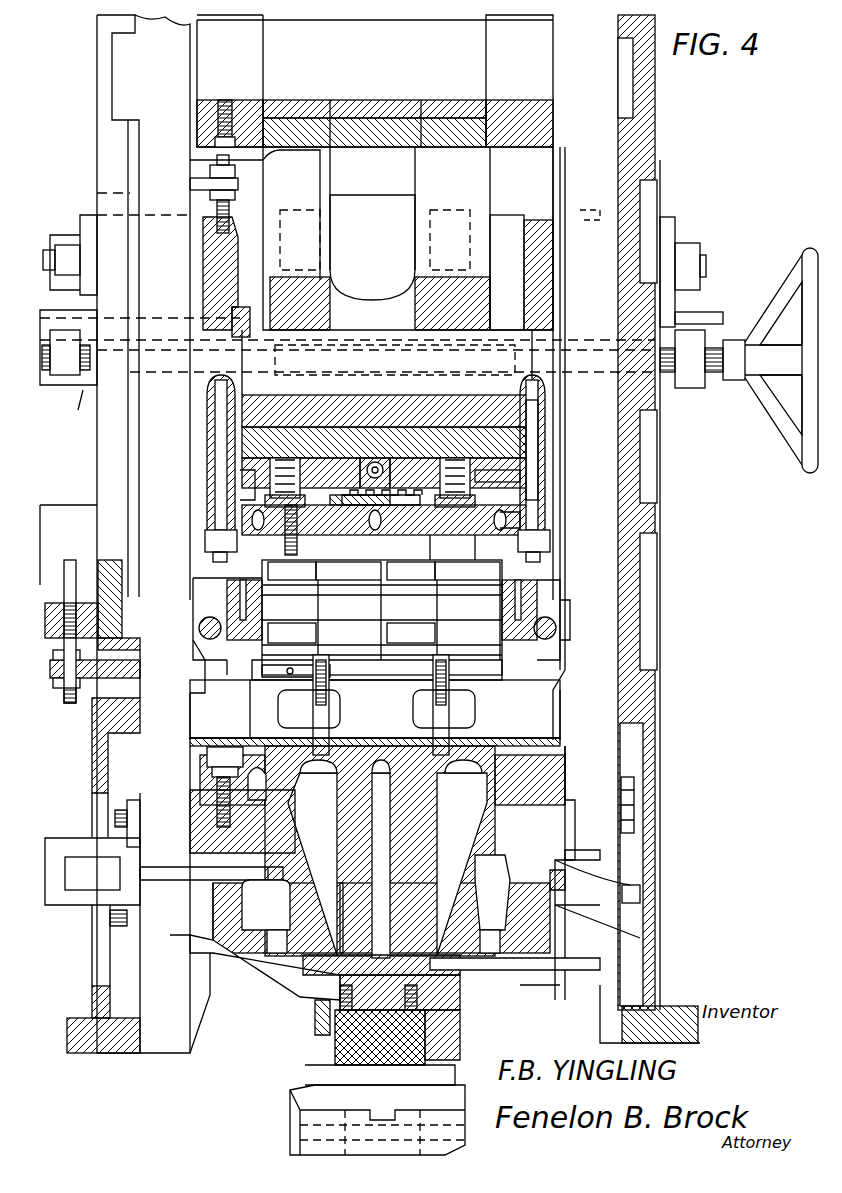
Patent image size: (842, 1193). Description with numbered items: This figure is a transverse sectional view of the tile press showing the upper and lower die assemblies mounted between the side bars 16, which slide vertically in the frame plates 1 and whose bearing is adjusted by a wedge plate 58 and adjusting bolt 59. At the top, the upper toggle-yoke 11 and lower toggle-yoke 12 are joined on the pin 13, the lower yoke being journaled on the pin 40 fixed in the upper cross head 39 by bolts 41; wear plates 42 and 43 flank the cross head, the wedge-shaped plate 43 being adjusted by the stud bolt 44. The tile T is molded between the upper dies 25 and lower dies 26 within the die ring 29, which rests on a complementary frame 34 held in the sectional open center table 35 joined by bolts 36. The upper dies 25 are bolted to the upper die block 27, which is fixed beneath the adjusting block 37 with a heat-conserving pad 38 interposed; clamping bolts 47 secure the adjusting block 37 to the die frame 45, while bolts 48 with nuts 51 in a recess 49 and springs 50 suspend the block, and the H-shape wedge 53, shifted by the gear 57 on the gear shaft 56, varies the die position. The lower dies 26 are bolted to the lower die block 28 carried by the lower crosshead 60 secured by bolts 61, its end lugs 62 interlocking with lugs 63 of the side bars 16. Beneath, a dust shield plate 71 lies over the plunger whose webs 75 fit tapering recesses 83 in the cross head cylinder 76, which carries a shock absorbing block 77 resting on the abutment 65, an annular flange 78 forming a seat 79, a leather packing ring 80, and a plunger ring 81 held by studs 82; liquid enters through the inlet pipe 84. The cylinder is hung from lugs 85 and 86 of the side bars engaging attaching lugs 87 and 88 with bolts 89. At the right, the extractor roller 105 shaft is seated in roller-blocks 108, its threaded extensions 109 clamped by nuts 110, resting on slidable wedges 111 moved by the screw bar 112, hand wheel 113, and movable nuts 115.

The frame plate 1 is at (92, 758).
The upper toggle-yoke 11 is at (240, 110).
The lower toggle-yoke 12 is at (330, 185).
The pin 13 is at (375, 81).
The side bars 16 is at (143, 415).
The upper dies 25 is at (382, 578).
The lower dies 26 is at (382, 637).
The upper die block 27 is at (416, 548).
The lower die block 28 is at (395, 670).
The die ring 29 is at (227, 590).
The complementary frame 34 is at (545, 600).
The open center table 35 is at (215, 652).
The bolts 36 is at (200, 622).
The adjusting block 37 is at (365, 520).
The pad 38 is at (464, 548).
The upper cross head 39 is at (548, 420).
The pin 40 is at (375, 465).
The bolts 41 is at (540, 462).
The wear plate 42 is at (556, 256).
The wear plate 43 is at (192, 242).
The stud bolt 44 is at (200, 205).
The die frame 45 is at (240, 472).
The clamping bolts 47 is at (510, 518).
The bolts 48 is at (290, 515).
The recess 49 is at (245, 480).
The springs 50 is at (512, 478).
The nuts 51 is at (445, 400).
The H-shape wedge 53 is at (392, 500).
The gear shaft 56 is at (360, 465).
The gear 57 is at (340, 440).
The wedge plate 58 is at (130, 520).
The adjusting bolt 59 is at (70, 605).
The lower crosshead 60 is at (262, 710).
The bolts 61 is at (320, 690).
The end lugs 62 is at (195, 710).
The lugs 63 is at (560, 690).
The stationary stop or abutment 65 is at (348, 1120).
The circular plate 71 is at (399, 869).
The webs 75 is at (387, 859).
The cross head cylinder 76 is at (300, 988).
The shock absorbing block 77 is at (365, 1035).
The annular flange 78 is at (565, 815).
The annular seat 79 is at (200, 848).
The leather packing ring 80 is at (640, 870).
The plunger ring 81 is at (200, 790).
The bolts or studs 82 is at (200, 815).
The tapering recesses 83 is at (376, 904).
The inlet pipe 84 is at (200, 890).
The lug 85 is at (568, 855).
The lug 86 is at (560, 904).
The attaching lug 87 is at (548, 874).
The attaching lug 88 is at (640, 935).
The bolts 89 is at (642, 895).
The extractor roller 105 is at (375, 247).
The roller-blocks 108 is at (506, 225).
The threaded extensions 109 is at (706, 265).
The nuts 110 is at (695, 243).
The slidable wedges 111 is at (690, 322).
The screw bar 112 is at (68, 329).
The hand wheel 113 is at (805, 455).
The movable nuts 115 is at (694, 385).
The tile T is at (352, 600).